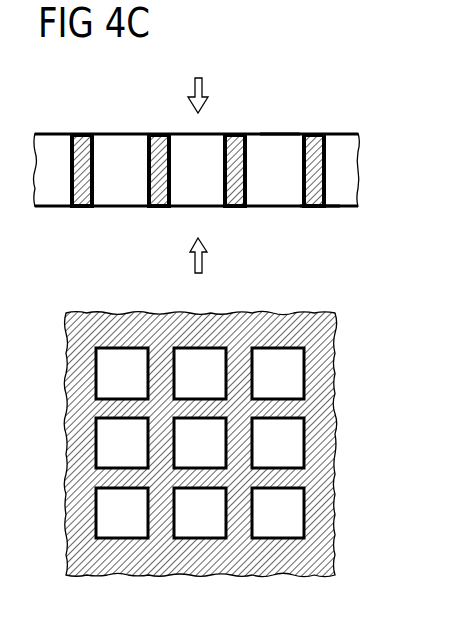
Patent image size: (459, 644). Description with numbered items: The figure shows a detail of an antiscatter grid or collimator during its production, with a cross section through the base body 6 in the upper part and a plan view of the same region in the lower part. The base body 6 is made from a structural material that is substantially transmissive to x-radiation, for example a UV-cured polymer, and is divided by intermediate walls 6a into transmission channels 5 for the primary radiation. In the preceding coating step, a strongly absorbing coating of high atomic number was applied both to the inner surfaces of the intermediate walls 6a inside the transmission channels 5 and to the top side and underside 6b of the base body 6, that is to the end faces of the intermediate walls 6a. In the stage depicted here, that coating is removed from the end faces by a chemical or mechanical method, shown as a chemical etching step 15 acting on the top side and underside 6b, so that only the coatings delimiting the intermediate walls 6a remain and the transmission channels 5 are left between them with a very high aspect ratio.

The transmission channel 5 is at (273, 530).
The base body 6 is at (353, 133).
The intermediate wall 6a is at (328, 170).
The top side and underside of the base body 6b is at (278, 112).
The chemical etching step 15 is at (193, 88).